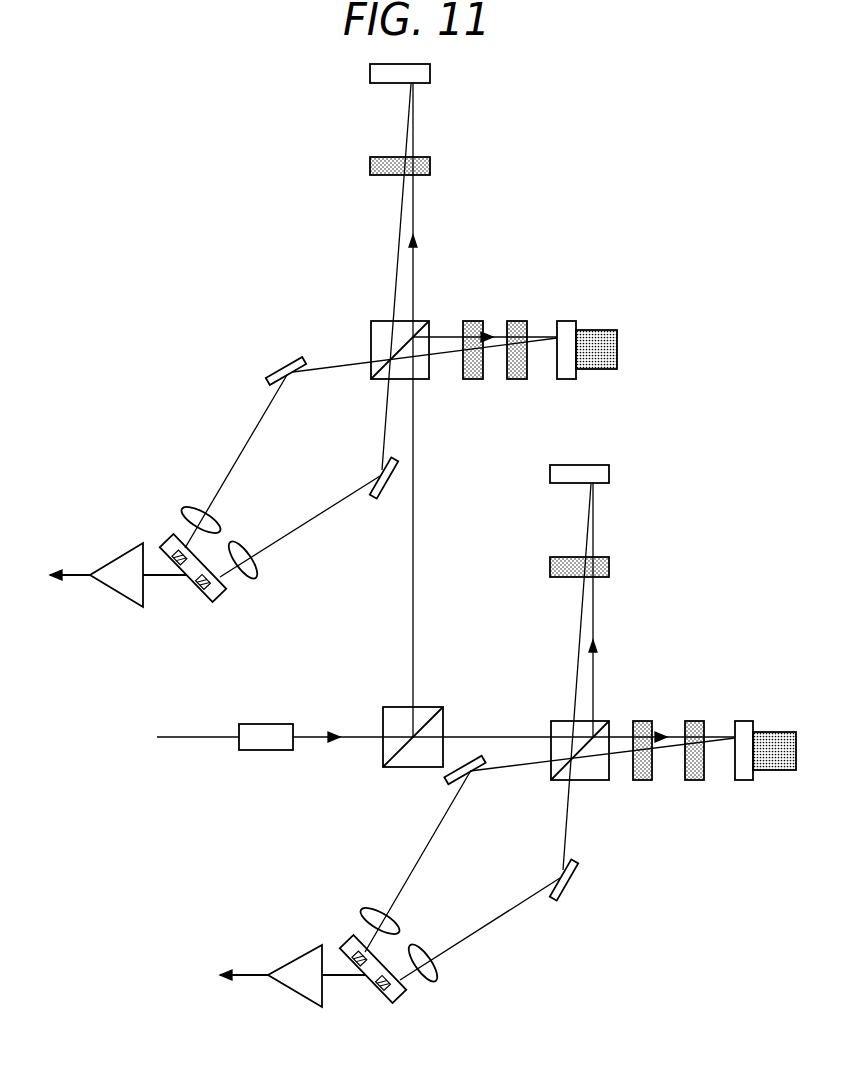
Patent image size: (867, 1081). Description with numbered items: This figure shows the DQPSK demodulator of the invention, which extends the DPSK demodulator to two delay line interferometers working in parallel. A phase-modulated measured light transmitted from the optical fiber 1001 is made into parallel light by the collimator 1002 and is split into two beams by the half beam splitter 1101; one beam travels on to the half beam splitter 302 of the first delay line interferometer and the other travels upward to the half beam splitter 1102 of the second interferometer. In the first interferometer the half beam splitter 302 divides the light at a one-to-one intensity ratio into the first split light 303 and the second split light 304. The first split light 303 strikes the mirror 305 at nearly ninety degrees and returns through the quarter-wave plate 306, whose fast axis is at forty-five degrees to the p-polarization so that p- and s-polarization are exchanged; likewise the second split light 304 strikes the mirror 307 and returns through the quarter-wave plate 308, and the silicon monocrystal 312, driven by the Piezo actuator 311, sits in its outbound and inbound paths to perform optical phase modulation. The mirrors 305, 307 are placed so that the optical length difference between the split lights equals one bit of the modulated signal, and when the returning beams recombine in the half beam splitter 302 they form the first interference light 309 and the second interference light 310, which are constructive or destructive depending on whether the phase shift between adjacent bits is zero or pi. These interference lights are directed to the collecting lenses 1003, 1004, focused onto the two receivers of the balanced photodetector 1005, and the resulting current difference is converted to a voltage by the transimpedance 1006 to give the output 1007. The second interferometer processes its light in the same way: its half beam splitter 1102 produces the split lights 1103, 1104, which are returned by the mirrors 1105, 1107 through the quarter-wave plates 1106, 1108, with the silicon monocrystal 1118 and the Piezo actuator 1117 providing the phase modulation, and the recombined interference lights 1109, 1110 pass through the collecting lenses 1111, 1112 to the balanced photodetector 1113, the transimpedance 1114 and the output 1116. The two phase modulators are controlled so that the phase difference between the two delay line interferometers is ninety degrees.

The optical fiber 1001 is at (184, 734).
The collimator 1002 is at (265, 722).
The polarization beam splitter 1101 is at (393, 706).
The polarization beam splitter 1102 is at (379, 320).
The light beam 1103 is at (413, 212).
The light beam 1104 is at (448, 335).
The reflecting mirror 1105 is at (430, 71).
The wavelength plate 1106 is at (430, 164).
The lens 1107 is at (568, 320).
The wavelength plate 1108 is at (470, 381).
The mirror 1109 is at (333, 367).
The mirror 1110 is at (380, 458).
The lens 1111 is at (185, 510).
The lens 1112 is at (258, 565).
The photodetector 1113 is at (230, 590).
The amplifier 1114 is at (120, 552).
The output signal 1116 is at (70, 582).
The Piezo actuator 1117 is at (612, 330).
The silicon monocrystal 1118 is at (520, 381).
The half beam splitter 302 is at (560, 720).
The first split light 303 is at (593, 613).
The second split light 304 is at (620, 735).
The mirror 305 is at (609, 472).
The quarter-wave plate 306 is at (609, 565).
The mirror 307 is at (745, 782).
The quarter-wave plate 308 is at (642, 782).
The first interference light 309 is at (507, 772).
The second interference light 310 is at (560, 858).
The Piezo actuator 311 is at (783, 770).
The silicon monocrystal 312 is at (693, 782).
The lens 1003 is at (372, 912).
The lens 1004 is at (440, 971).
The photodetector 1005 is at (410, 992).
The amplifier 1006 is at (300, 951).
The output signal 1007 is at (245, 982).